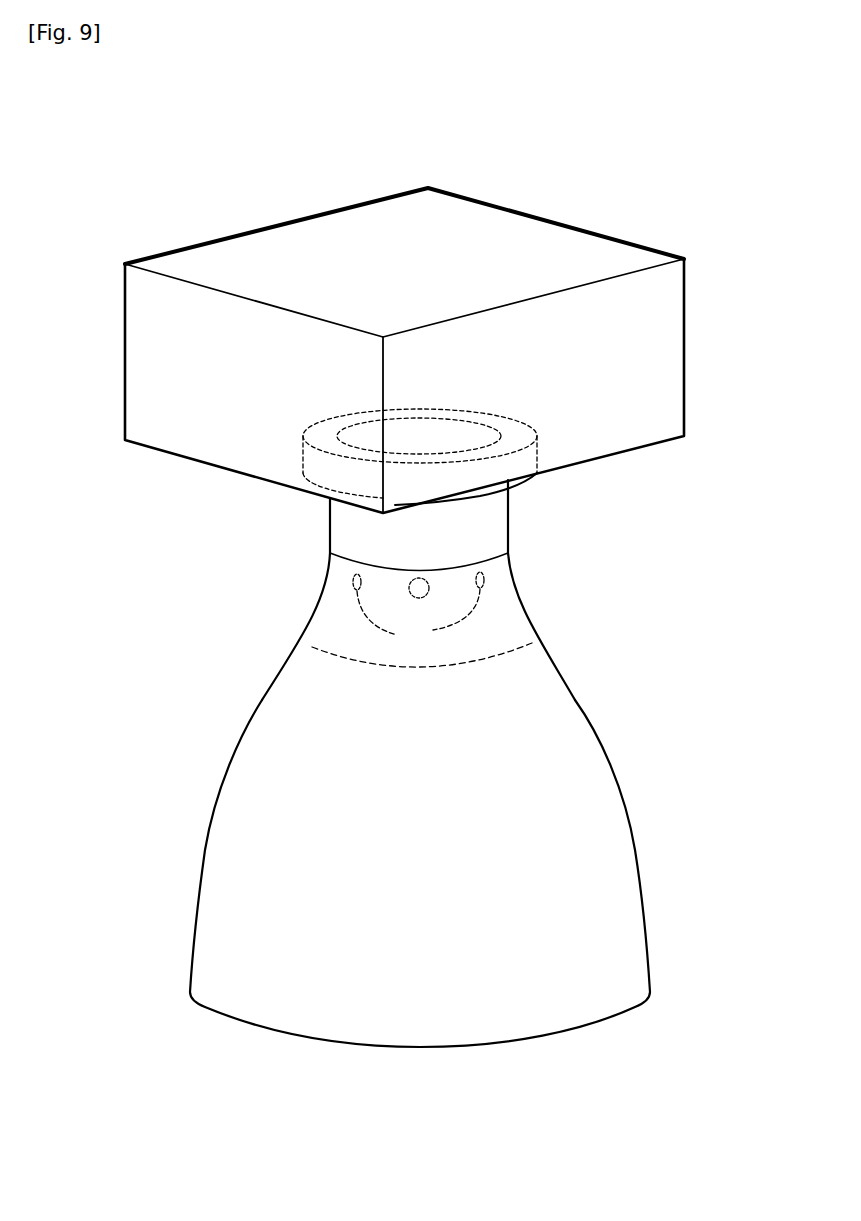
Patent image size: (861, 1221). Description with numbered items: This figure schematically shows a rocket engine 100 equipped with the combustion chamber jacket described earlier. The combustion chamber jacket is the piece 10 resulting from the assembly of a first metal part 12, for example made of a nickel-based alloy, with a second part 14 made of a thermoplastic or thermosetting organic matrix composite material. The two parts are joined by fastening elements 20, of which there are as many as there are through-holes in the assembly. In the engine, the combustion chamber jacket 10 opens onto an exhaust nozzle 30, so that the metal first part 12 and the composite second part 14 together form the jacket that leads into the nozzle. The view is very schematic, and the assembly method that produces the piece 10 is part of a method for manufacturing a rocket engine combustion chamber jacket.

The rocket engine 100 is at (682, 186).
The piece 10 is at (424, 728).
The first metal part 12 is at (500, 523).
The second part 14 is at (522, 625).
The fastening elements 20 is at (419, 598).
The exhaust nozzle 30 is at (607, 808).